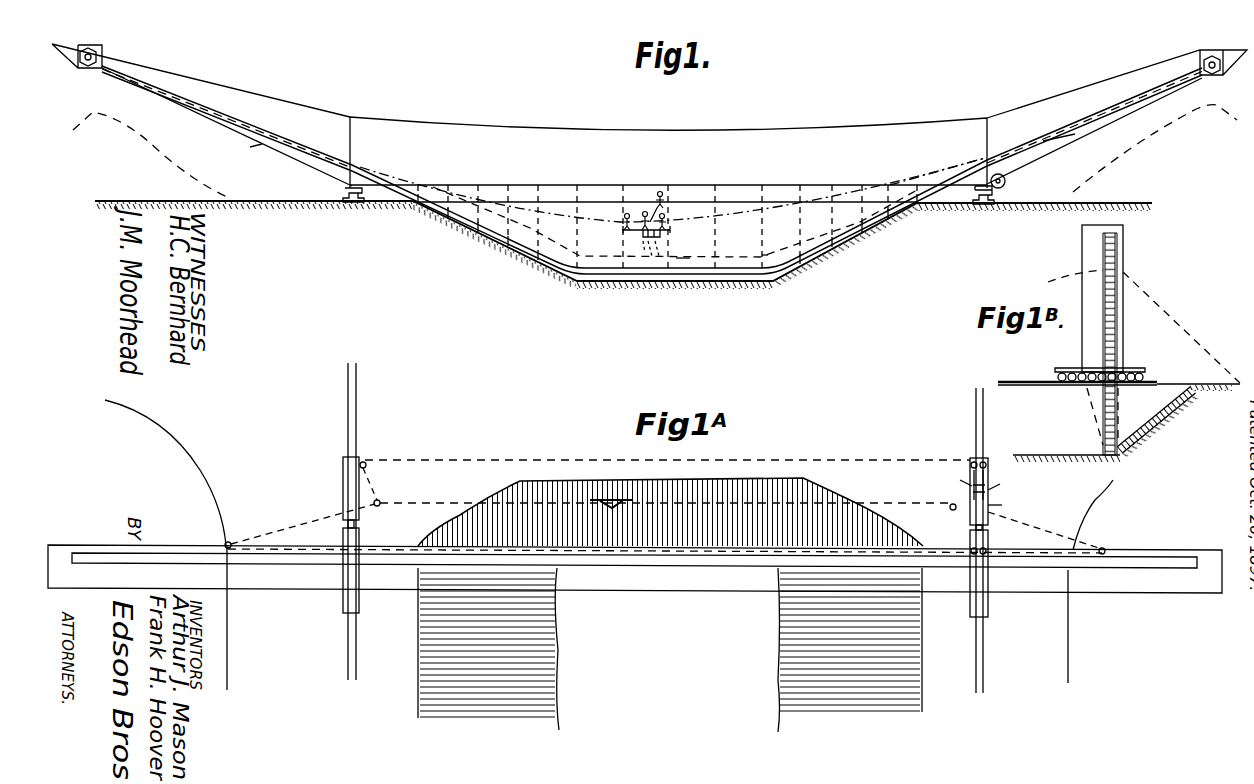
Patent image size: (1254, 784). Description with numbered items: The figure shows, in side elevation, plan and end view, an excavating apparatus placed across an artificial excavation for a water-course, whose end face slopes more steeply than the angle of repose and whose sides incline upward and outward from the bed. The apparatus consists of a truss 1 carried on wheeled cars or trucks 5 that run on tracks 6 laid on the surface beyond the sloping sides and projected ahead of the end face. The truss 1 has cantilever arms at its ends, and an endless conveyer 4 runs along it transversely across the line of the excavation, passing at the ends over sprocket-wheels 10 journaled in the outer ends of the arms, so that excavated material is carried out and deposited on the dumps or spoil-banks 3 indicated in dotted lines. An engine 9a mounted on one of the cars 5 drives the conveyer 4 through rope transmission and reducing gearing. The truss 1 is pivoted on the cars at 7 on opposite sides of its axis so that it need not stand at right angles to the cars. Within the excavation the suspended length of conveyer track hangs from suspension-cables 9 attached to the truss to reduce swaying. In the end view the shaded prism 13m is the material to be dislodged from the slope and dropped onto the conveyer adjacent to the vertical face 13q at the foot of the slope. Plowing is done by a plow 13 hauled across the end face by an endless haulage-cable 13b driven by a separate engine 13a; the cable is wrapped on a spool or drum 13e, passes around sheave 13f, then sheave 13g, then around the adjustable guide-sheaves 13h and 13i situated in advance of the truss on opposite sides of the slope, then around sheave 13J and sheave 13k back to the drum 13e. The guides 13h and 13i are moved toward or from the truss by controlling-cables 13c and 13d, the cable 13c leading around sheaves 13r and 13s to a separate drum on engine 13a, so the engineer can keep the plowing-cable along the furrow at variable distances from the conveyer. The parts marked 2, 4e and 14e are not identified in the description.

In FIG. 1, the truss 1 is at (649, 116).
In FIG. 1, the ground / excavation and piers 2 is at (623, 254).
In FIG. 1A, the ground / excavation and piers 2 is at (670, 650).
In FIG. 1, the dumps or spoil-banks 3 is at (655, 151).
In FIG. 1, the traveling or endless conveyer 4 is at (212, 114).
In FIG. 1, the belt section 4e is at (686, 260).
In FIG. 1, the belt return section 14e is at (776, 246).
In FIG. 1, the cars or trucks 5 is at (344, 192).
In FIG. 1A, the cars or trucks 5 is at (360, 602).
In FIG. 1B, the cars or trucks 5 is at (1075, 367).
In FIG. 1A, the tracks 6 is at (672, 528).
In FIG. 1A, the pivots 7 is at (343, 596).
In FIG. 1, the suspension-cables 9 is at (672, 213).
In FIG. 1, the engine 9a is at (990, 186).
In FIG. 1, the sprocket-wheels 10 is at (651, 50).
In FIG. 1, the plow 13 is at (646, 224).
In FIG. 1A, the plow 13 is at (665, 519).
In FIG. 1A, the engine 13a is at (1005, 486).
In FIG. 1, the haulage-cable 13b is at (937, 171).
In FIG. 1A, the haulage-cable 13b is at (670, 512).
In FIG. 1A, the controlling-cable 13c is at (667, 453).
In FIG. 1A, the controlling-cable 13d is at (957, 486).
In FIG. 1A, the spool or drum 13e is at (1045, 523).
In FIG. 1A, the sheave 13f is at (960, 545).
In FIG. 1, the sheave 13g is at (246, 146).
In FIG. 1A, the sheave 13g is at (300, 526).
In FIG. 1A, the guide-sheave 13h is at (658, 487).
In FIG. 1A, the guide-sheave 13i is at (942, 508).
In FIG. 1, the sheave 13J is at (1075, 142).
In FIG. 1A, the sheave 13J is at (1114, 545).
In FIG. 1A, the sheave 13k is at (994, 558).
In FIG. 1B, the prism of material 13m is at (1158, 345).
In FIG. 1B, the vertical face 13q is at (1122, 445).
In FIG. 1A, the sheave 13r is at (374, 455).
In FIG. 1A, the sheave 13s is at (967, 457).